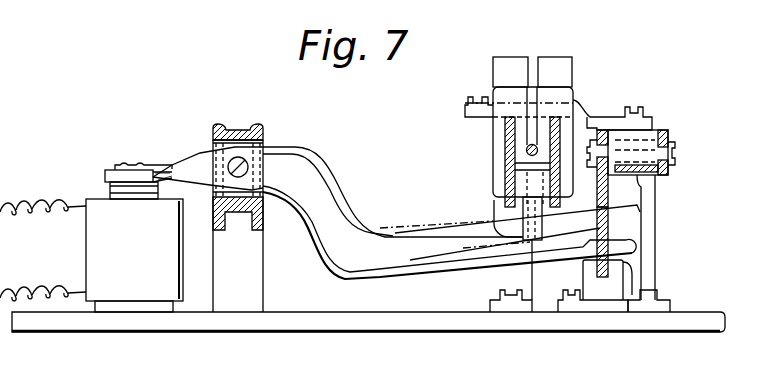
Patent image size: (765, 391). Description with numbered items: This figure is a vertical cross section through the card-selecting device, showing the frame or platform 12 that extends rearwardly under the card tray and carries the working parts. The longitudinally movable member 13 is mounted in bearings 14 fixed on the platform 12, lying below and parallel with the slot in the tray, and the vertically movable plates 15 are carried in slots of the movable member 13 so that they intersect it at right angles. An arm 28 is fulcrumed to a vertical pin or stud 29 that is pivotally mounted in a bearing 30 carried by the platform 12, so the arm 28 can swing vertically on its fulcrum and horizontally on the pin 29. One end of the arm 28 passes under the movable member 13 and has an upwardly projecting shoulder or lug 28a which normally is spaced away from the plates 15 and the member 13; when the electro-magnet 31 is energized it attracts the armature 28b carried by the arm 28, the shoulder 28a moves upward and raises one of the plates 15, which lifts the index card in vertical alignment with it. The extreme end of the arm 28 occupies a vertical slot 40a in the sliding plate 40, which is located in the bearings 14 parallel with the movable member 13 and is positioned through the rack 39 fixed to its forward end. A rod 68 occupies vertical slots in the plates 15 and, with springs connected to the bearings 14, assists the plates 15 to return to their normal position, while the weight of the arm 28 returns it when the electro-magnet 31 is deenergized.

The frame or platform 12 is at (285, 332).
The longitudinally movable member 13 is at (513, 168).
The bearings 14 is at (592, 118).
The vertically movable plates 15 is at (507, 95).
The arms 28 is at (335, 218).
The upwardly projecting shoulder or lug 28a is at (527, 213).
The armatures 28b is at (108, 170).
The vertical pins or studs 29 is at (235, 198).
The bearings 30 is at (263, 126).
The electro-magnets 31 is at (134, 247).
The rack 39 is at (660, 130).
The sliding plate 40 is at (608, 193).
The vertical slots 40a is at (603, 228).
The rod 68 is at (527, 148).